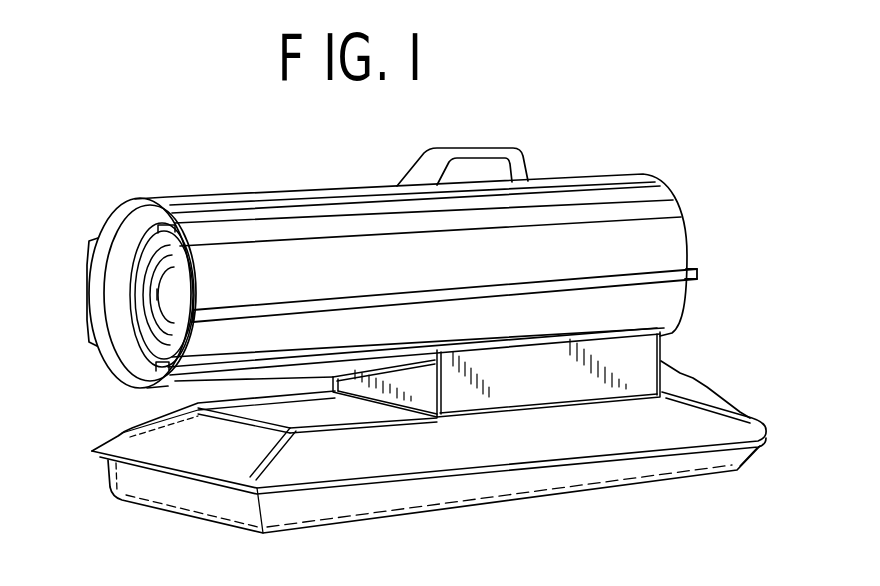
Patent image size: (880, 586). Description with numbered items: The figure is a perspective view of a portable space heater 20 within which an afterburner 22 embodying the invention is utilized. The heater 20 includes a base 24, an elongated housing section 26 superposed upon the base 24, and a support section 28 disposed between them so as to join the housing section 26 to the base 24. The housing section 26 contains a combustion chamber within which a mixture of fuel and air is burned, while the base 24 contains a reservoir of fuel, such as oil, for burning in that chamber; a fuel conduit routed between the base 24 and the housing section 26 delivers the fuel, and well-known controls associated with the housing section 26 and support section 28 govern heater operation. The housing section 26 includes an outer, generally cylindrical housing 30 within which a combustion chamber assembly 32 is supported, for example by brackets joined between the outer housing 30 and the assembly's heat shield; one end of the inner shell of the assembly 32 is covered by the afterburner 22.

The portable space heater 20 is at (268, 142).
The afterburner 22 is at (150, 312).
The base 24 is at (744, 454).
The housing section 26 is at (666, 253).
The support section 28 is at (655, 351).
The outer housing 30 is at (221, 213).
The combustion chamber assembly 32 is at (110, 258).